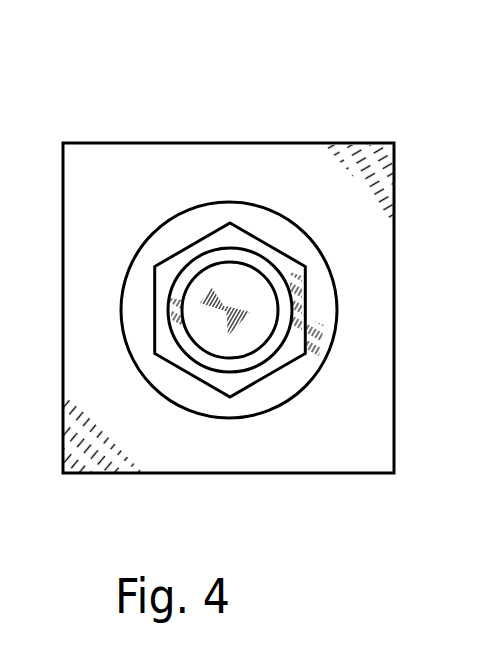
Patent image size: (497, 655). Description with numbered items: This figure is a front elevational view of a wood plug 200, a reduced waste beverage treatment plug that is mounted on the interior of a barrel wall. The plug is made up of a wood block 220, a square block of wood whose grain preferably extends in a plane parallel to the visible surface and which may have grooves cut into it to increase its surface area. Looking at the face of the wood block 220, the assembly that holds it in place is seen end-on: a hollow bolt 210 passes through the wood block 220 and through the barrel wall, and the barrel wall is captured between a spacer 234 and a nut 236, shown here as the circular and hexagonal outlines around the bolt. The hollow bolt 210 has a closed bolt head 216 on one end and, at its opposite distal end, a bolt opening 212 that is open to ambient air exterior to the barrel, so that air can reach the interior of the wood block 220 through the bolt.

The wood plug 200 is at (115, 36).
The wood block 220 is at (88, 161).
The spacer 234 is at (266, 209).
The nut 236 is at (242, 373).
The hollow bolt 210 is at (186, 347).
The bolt opening 212 is at (258, 317).
The bolt head 216 is at (478, 250).